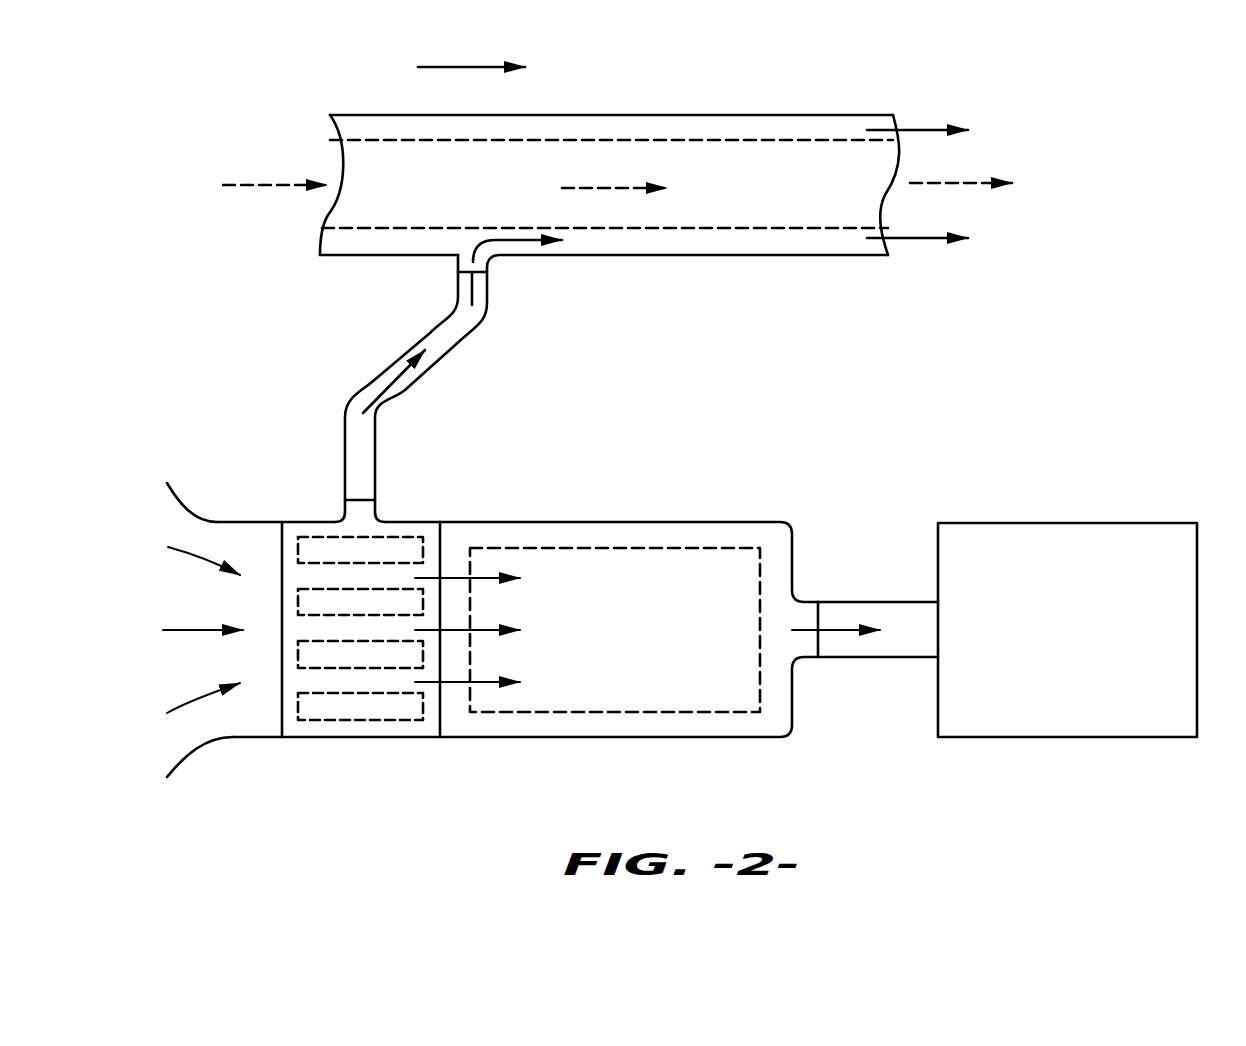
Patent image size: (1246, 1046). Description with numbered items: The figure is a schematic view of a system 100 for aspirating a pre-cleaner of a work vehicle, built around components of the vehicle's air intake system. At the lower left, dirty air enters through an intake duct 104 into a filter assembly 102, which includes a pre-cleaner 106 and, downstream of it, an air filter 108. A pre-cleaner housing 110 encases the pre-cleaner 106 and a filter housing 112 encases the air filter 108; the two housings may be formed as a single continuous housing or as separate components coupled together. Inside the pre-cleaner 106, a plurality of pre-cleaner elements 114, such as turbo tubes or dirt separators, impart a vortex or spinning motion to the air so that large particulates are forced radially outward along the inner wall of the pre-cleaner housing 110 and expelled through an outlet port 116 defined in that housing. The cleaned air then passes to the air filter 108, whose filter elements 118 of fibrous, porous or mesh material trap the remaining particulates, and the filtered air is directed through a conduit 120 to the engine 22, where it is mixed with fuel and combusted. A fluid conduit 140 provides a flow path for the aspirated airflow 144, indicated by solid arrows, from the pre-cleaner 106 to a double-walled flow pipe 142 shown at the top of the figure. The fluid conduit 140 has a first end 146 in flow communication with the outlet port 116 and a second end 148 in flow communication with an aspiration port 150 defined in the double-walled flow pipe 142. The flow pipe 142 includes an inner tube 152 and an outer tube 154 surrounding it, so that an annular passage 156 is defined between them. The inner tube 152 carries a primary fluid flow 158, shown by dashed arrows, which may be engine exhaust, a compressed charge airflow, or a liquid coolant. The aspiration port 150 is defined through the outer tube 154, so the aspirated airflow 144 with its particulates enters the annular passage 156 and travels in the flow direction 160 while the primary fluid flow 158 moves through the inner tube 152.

The engine 22 is at (1080, 643).
The system 100 is at (1150, 140).
The filter assembly 102 is at (606, 483).
The intake duct 104 is at (178, 498).
The pre-cleaner 106 is at (335, 722).
The air filter 108 is at (673, 728).
The pre-cleaner housing 110 is at (392, 737).
The filter housing 112 is at (567, 737).
The pre-cleaner elements 114 is at (297, 602).
The outlet port 116 is at (385, 507).
The filter elements 118 is at (685, 548).
The conduit 120 is at (832, 602).
The fluid conduit 140 is at (452, 353).
The double-walled flow pipe 142 is at (657, 77).
The aspirated airflow 144 is at (917, 130).
The first end 146 is at (358, 487).
The second end 148 is at (477, 292).
The aspiration port 150 is at (457, 262).
The inner tube 152 is at (733, 138).
The outer tube 154 is at (792, 255).
The annular passage 156 is at (688, 243).
The primary fluid flow 158 is at (258, 182).
The flow direction 160 is at (452, 63).